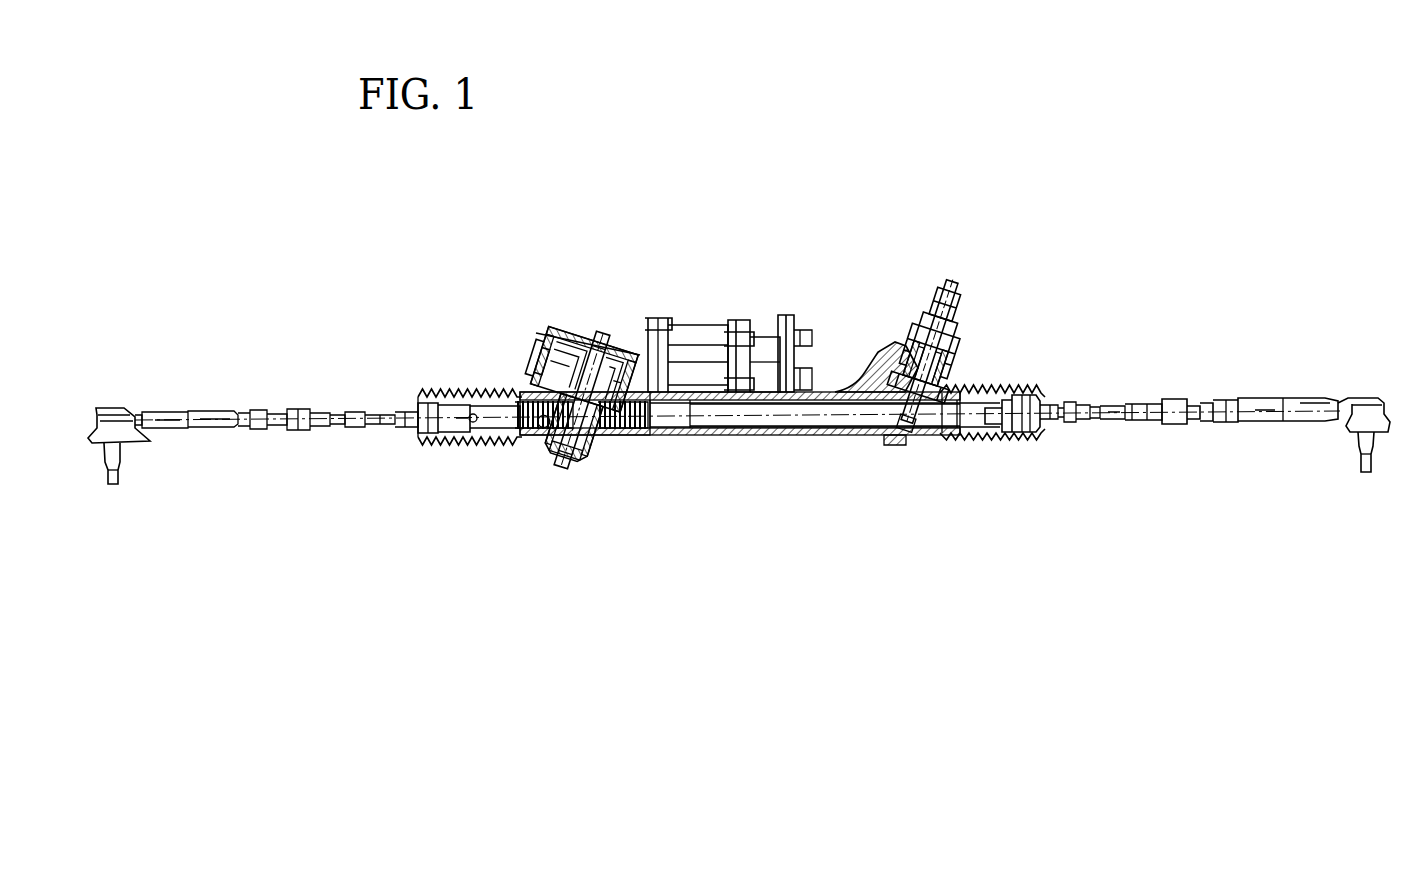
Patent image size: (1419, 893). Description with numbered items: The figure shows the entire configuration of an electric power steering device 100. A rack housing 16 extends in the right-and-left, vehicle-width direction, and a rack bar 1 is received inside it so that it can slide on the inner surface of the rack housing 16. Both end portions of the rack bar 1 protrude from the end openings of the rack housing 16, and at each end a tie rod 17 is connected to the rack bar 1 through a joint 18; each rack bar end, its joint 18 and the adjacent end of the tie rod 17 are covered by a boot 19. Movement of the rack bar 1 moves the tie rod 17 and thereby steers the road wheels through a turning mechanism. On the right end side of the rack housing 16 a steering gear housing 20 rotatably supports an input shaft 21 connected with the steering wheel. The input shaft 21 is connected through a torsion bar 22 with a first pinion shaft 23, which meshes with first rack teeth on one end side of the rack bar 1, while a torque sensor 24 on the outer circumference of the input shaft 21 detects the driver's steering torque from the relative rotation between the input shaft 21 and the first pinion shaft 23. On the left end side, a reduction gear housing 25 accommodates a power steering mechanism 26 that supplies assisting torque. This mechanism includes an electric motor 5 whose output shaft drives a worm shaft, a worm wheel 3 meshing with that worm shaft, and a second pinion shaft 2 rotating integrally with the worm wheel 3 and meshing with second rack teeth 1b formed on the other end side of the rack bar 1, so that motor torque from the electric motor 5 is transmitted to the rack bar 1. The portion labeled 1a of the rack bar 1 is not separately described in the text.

The electric power steering device 100 is at (817, 301).
The rack bar 1 is at (730, 429).
The housing portion 1a is at (878, 410).
The second rack teeth 1b is at (618, 435).
The second pinion shaft 2 is at (573, 461).
The worm wheel 3 is at (548, 331).
The electric motor 5 is at (746, 323).
The rack housing 16 is at (786, 435).
The tie rod 17 is at (1100, 420).
The joint 18 is at (1021, 438).
The boot 19 is at (1021, 389).
The steering gear housing 20 is at (869, 366).
The input shaft 21 is at (958, 302).
The torsion bar 22 is at (931, 298).
The first pinion shaft 23 is at (896, 442).
The torque sensor 24 is at (956, 350).
The reduction gear housing 25 is at (531, 378).
The power steering mechanism 26 is at (593, 322).